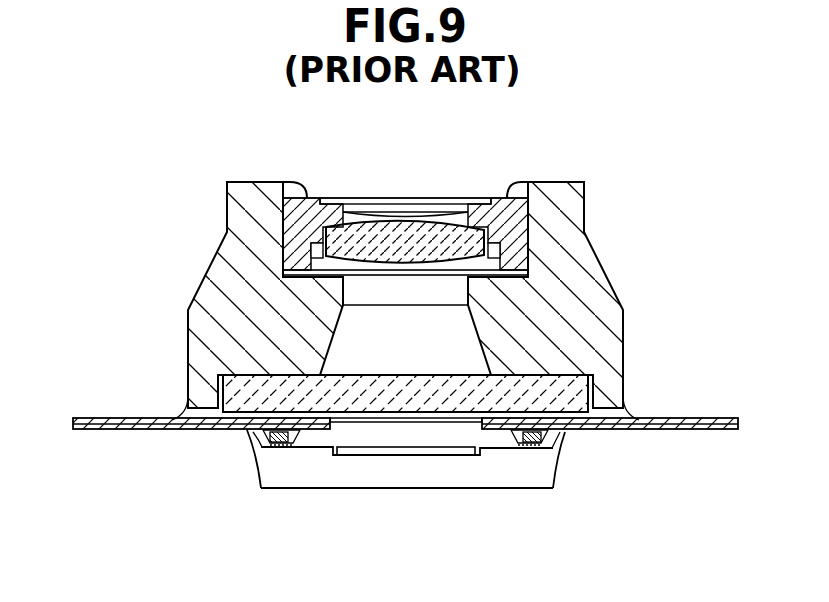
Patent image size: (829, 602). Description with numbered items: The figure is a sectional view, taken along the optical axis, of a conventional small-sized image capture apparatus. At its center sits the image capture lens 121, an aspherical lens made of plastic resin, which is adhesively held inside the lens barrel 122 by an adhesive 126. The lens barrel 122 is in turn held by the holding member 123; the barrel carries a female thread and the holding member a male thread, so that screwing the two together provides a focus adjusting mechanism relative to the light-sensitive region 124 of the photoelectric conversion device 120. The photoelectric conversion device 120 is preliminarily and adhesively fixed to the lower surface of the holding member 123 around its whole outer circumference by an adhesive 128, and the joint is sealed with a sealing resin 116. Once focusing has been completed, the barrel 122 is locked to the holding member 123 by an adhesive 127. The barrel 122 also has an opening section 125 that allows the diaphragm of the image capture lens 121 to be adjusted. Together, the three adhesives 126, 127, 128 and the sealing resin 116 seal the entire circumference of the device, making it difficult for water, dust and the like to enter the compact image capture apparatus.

The sealing resin 116 is at (565, 438).
The photoelectric conversion device 120 is at (366, 477).
The image capture lens 121 is at (323, 241).
The lens barrel 122 is at (327, 256).
The holding member 123 is at (240, 203).
The light-sensitive region 124 is at (463, 456).
The opening section 125 is at (412, 199).
The adhesive 126 is at (500, 252).
The adhesive 127 is at (520, 193).
The adhesive 128 is at (633, 407).